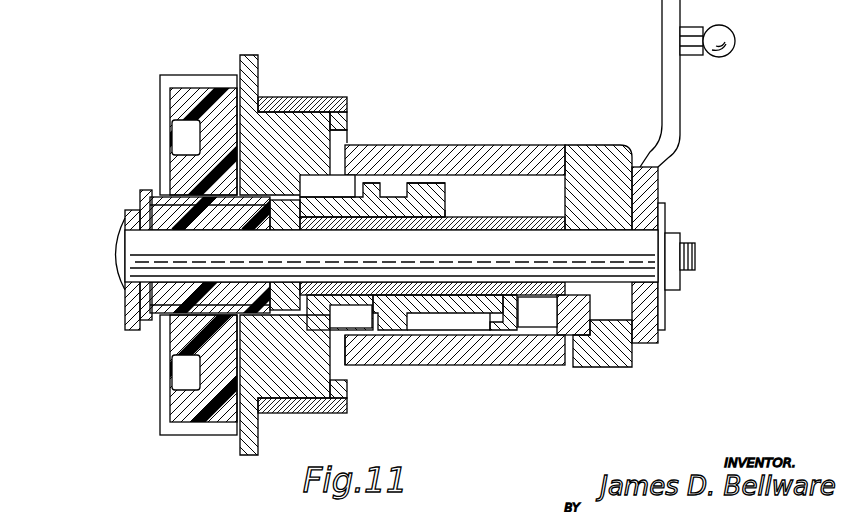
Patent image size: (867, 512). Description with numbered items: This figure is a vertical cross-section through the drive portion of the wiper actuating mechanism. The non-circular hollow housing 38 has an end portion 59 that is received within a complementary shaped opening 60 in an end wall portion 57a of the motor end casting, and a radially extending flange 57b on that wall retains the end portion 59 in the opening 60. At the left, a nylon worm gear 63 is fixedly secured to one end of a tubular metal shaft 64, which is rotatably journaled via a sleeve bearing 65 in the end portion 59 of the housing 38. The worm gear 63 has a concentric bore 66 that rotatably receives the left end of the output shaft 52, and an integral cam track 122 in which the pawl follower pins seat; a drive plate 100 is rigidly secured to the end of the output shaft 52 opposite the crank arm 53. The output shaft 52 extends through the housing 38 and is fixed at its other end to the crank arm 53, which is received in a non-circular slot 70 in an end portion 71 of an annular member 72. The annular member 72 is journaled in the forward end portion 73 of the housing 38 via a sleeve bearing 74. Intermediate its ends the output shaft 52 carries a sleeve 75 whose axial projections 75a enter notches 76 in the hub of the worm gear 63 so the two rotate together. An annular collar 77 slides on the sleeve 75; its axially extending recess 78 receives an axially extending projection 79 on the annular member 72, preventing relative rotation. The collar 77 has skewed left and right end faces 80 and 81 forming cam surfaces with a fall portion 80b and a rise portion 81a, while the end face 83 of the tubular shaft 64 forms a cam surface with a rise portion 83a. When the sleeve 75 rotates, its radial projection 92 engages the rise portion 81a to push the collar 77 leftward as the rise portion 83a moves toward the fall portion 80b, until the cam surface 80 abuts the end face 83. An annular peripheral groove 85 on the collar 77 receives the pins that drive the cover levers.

The housing 38 is at (440, 150).
The output shaft 52 is at (640, 220).
The crank arm 53 is at (672, 97).
The end wall portion 57a is at (270, 107).
The radially extending flange 57b is at (350, 118).
The end portion 59 is at (355, 123).
The opening 60 is at (270, 110).
The worm gear 63 is at (190, 78).
The tubular metal shaft 64 is at (180, 200).
The sleeve bearing 65 is at (186, 368).
The concentric bore 66 is at (157, 230).
The non-circular slot 70 is at (665, 297).
The end portion 71 is at (660, 332).
The annular member 72 is at (615, 303).
The forward end portion 73 is at (593, 157).
The sleeve bearing 74 is at (592, 323).
The sleeve 75 is at (510, 217).
The projections 75a is at (343, 205).
The notches 76 is at (287, 233).
The annular collar 77 is at (337, 357).
The axially extending recess 78 is at (443, 326).
The axially extending projection 79 is at (512, 312).
The left end face 80 is at (350, 195).
The fall portion 80b is at (363, 180).
The right end face 81 is at (448, 216).
The rise portion 81a is at (450, 213).
The end face 83 is at (285, 385).
The rise portion 83a is at (318, 305).
The annular peripheral groove 85 is at (393, 332).
The radial projection 92 is at (520, 320).
The drive plate 100 is at (125, 310).
The cam track 122 is at (180, 133).